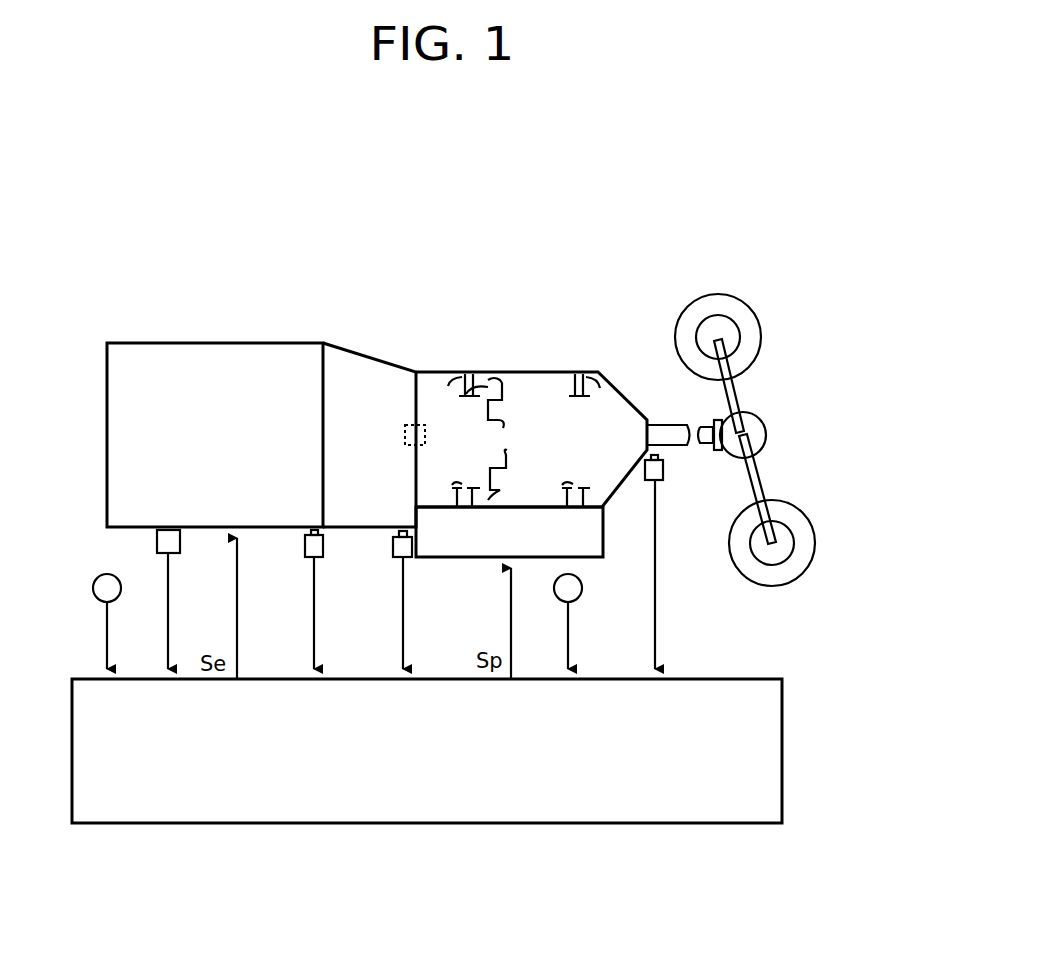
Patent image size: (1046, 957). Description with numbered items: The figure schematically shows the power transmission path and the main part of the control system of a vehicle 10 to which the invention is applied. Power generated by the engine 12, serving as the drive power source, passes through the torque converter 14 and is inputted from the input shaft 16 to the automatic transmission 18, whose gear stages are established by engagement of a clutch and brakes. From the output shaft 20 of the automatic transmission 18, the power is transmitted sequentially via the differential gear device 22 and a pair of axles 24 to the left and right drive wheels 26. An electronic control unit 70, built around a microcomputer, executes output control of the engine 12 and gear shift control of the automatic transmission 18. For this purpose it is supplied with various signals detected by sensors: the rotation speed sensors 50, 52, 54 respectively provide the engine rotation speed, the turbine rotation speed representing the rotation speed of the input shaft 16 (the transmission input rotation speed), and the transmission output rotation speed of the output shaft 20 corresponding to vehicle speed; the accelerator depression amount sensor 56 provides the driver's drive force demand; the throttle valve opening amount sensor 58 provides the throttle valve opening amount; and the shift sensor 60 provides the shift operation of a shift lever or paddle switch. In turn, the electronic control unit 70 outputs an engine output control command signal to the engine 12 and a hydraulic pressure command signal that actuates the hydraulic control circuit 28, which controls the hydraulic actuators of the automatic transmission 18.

The vehicle 10 is at (583, 258).
The engine 12 is at (188, 350).
The torque converter 14 is at (345, 360).
The input shaft 16 is at (412, 425).
The automatic transmission 18 is at (554, 378).
The output shaft 20 is at (667, 432).
The differential gear device 22 is at (757, 425).
The axles 24 is at (735, 392).
The drive wheel 26 is at (732, 308).
The hydraulic control circuit 28 is at (437, 558).
The rotation speed sensor 50 is at (304, 542).
The rotation speed sensor 52 is at (392, 545).
The rotation speed sensor 54 is at (665, 470).
The accelerator depression amount sensor 56 is at (97, 580).
The throttle valve opening amount sensor 58 is at (173, 545).
The shift sensor 60 is at (560, 577).
The electronic control unit 70 is at (720, 678).